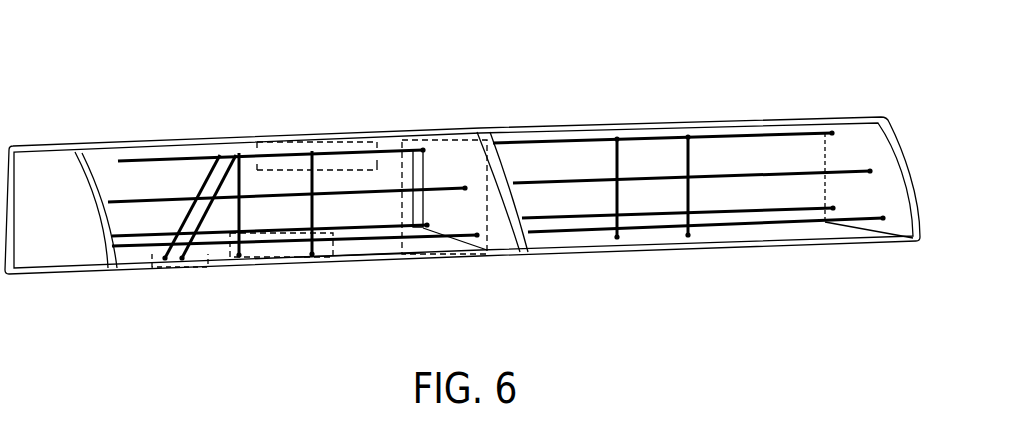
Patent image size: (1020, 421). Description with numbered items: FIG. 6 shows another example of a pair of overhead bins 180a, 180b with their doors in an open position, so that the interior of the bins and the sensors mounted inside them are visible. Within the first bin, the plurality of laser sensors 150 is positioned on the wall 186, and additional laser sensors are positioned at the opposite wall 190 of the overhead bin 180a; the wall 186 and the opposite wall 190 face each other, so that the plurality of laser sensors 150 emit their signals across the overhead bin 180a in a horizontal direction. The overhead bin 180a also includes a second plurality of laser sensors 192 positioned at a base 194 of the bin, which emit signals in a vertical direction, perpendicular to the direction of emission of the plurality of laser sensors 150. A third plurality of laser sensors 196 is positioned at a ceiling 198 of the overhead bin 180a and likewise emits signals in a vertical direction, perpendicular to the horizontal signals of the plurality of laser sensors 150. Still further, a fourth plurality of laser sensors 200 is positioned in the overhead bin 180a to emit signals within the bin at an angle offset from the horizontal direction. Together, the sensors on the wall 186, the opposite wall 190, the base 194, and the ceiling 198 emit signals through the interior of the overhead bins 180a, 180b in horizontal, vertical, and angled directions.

The overhead bin 180a is at (172, 124).
The overhead bin 180b is at (652, 107).
The wall 186 is at (499, 262).
The ceiling 198 is at (118, 163).
The opposite wall 190 is at (125, 248).
The third plurality of laser sensors 196 is at (318, 128).
The plurality of laser sensors 150 is at (442, 131).
The second plurality of laser sensors 192 is at (287, 269).
The fourth plurality of laser sensors 200 is at (184, 272).
The base 194 is at (371, 266).